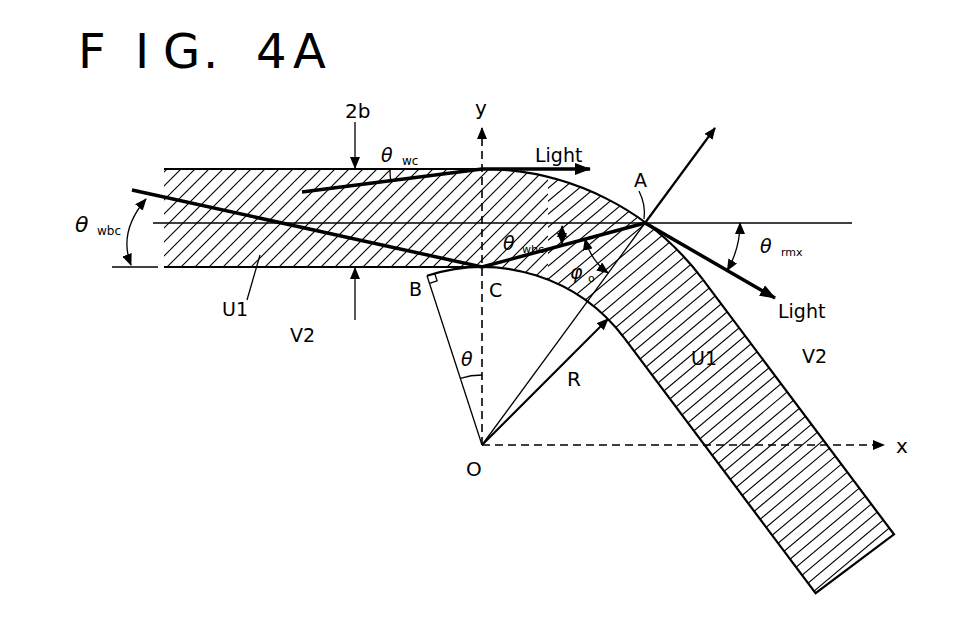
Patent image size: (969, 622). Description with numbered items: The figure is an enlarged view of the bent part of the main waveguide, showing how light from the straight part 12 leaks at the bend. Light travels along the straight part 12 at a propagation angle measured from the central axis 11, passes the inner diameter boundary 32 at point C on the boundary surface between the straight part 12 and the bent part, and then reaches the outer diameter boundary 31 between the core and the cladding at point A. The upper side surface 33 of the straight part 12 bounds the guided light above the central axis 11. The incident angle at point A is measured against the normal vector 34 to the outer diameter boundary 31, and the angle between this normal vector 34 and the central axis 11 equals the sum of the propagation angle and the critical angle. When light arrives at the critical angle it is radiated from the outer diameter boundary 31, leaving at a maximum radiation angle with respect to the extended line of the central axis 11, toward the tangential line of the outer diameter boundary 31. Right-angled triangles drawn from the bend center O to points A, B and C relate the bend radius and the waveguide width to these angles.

The central axis 11 is at (818, 223).
The straight part 12 is at (273, 186).
The outer diameter boundary 31 is at (589, 190).
The inner diameter boundary 32 is at (476, 270).
The straight side surface of waveguide 33 is at (488, 168).
The normal vector 34 is at (700, 147).